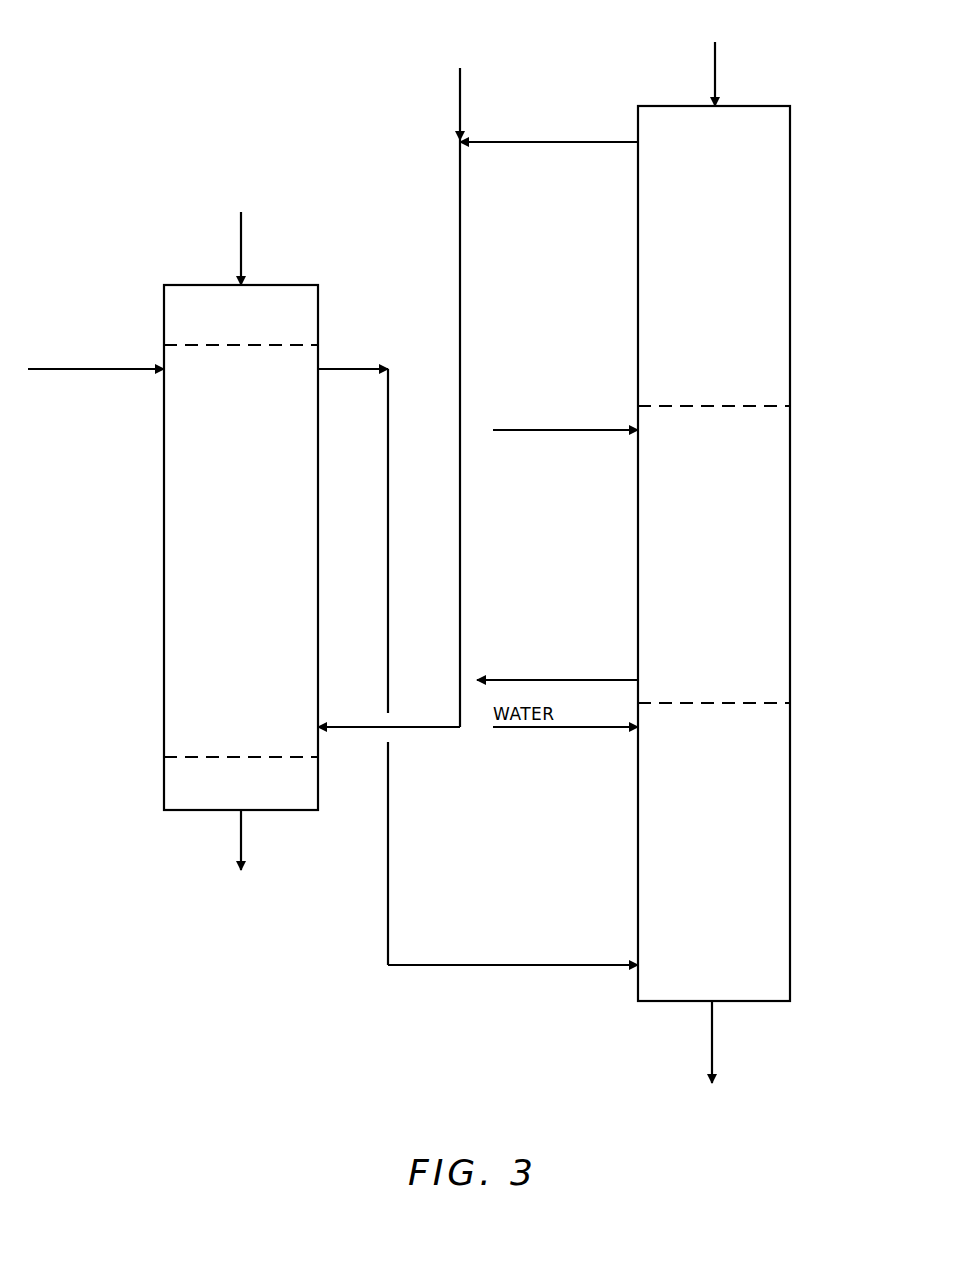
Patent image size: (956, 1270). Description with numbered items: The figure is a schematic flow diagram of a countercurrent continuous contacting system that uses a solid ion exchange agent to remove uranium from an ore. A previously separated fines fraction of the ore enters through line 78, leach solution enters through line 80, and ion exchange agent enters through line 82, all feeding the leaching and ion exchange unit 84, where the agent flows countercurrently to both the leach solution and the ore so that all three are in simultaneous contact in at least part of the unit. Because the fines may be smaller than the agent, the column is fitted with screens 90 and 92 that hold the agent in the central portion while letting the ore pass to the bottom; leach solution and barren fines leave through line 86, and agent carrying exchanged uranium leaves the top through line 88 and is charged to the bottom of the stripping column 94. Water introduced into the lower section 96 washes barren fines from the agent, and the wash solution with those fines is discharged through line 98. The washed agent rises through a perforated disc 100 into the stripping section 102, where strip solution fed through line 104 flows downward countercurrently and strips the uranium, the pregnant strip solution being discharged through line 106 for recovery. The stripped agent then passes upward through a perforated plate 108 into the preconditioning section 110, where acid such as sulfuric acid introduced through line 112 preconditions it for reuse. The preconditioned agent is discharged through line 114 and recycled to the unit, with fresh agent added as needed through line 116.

The line 78 is at (241, 232).
The line 80 is at (96, 372).
The line 82 is at (361, 726).
The leaching and ion exchange unit 84 is at (164, 557).
The line 86 is at (241, 828).
The line 88 is at (350, 369).
The screen 90 is at (230, 350).
The screen 92 is at (231, 756).
The stripping column 94 is at (637, 504).
The lower section 96 is at (699, 882).
The line 98 is at (712, 1039).
The perforated disc 100 is at (701, 703).
The stripping section 102 is at (697, 584).
The line 104 is at (591, 428).
The line 106 is at (501, 680).
The perforated plate 108 is at (702, 405).
The preconditioning section 110 is at (697, 294).
The line 112 is at (715, 72).
The line 114 is at (562, 146).
The line 116 is at (460, 88).